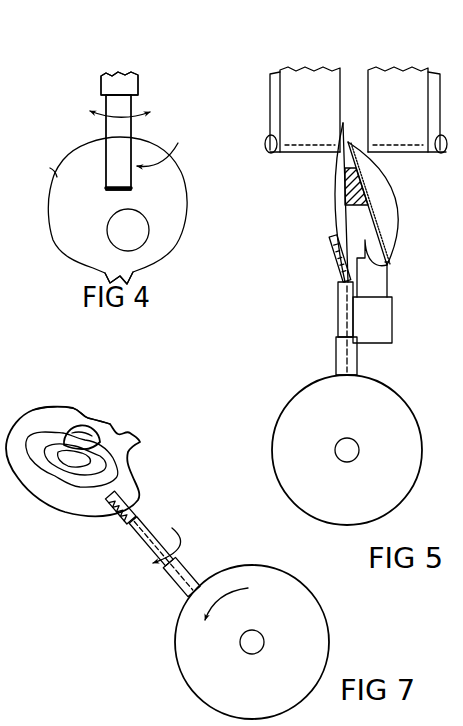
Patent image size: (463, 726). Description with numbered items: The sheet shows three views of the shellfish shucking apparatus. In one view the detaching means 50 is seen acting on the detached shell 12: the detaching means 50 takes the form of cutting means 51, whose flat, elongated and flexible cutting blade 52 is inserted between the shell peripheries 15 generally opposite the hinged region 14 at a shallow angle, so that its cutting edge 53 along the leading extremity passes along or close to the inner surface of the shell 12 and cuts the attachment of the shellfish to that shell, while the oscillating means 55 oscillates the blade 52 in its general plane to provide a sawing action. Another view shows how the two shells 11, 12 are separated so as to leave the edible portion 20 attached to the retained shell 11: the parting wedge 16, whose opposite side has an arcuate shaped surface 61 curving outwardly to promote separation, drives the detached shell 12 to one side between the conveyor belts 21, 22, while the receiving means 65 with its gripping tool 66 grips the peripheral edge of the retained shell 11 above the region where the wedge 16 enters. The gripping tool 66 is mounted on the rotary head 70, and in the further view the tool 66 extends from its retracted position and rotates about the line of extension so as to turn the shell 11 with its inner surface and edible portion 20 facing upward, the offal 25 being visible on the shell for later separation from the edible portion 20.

In FIG. 5, the retained shell 11 is at (340, 177).
In FIG. 7, the retained shell 11 is at (41, 424).
In FIG. 4, the detached shell 12 is at (177, 207).
In FIG. 5, the detached shell 12 is at (388, 203).
In FIG. 4, the hinged region 14 is at (106, 284).
In FIG. 7, the hinged region 14 is at (140, 424).
In FIG. 4, the shell peripheries 15 is at (57, 177).
In FIG. 5, the parting wedge 16 is at (374, 283).
In FIG. 4, the edible portion 20 is at (139, 234).
In FIG. 5, the edible portion 20 is at (348, 200).
In FIG. 7, the edible portion 20 is at (80, 433).
In FIG. 5, the conveyor belt 21 is at (298, 80).
In FIG. 5, the conveyor belt 22 is at (394, 82).
In FIG. 7, the offal 25 is at (73, 466).
In FIG. 4, the detaching means 50 is at (148, 86).
In FIG. 4, the cutting means 51 is at (167, 145).
In FIG. 4, the cutting blade 52 is at (110, 125).
In FIG. 4, the cutting edge 53 is at (110, 192).
In FIG. 4, the oscillating means 55 is at (110, 84).
In FIG. 5, the arcuate shaped surface 61 is at (374, 253).
In FIG. 5, the receiving means 65 is at (336, 315).
In FIG. 7, the receiving means 65 is at (189, 538).
In FIG. 5, the gripping tool 66 is at (336, 252).
In FIG. 7, the gripping tool 66 is at (121, 516).
In FIG. 5, the rotary head 70 is at (400, 418).
In FIG. 7, the rotary head 70 is at (193, 638).